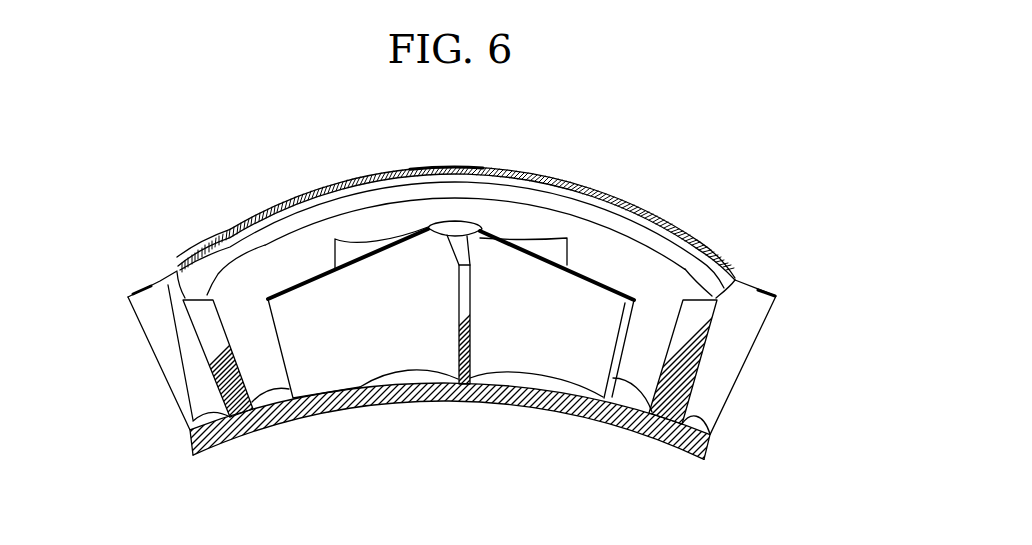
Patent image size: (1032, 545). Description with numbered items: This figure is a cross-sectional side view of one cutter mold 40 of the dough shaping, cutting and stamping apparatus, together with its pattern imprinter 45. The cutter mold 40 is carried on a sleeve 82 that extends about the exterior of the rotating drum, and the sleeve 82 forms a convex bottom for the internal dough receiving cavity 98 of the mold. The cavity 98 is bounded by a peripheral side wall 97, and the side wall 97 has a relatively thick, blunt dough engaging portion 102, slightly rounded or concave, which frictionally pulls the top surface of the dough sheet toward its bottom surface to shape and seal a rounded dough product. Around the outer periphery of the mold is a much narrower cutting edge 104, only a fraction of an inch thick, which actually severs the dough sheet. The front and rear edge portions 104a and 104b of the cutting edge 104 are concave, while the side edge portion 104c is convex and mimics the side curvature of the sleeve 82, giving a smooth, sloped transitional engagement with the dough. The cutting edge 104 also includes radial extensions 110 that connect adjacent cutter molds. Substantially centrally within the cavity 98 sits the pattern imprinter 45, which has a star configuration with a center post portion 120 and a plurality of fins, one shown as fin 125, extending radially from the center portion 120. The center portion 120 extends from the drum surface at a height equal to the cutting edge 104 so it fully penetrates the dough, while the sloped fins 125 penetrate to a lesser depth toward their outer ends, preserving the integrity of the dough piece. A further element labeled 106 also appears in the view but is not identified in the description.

The cutter mold 40 is at (728, 257).
The pattern imprinter 45 is at (434, 222).
The sleeve 82 is at (698, 430).
The peripheral side wall 97 is at (293, 192).
The internal dough receiving cavity 98 is at (645, 266).
The dough engaging portion 102 is at (263, 175).
The cutting edge 104 is at (175, 257).
The front edge portion 104a is at (167, 292).
The rear edge portion 104b is at (745, 279).
The side edge portion 104c is at (390, 167).
The outer wall 106 is at (613, 193).
The radial extensions 110 is at (130, 296).
The center post portion 120 is at (459, 228).
The fin 125 is at (350, 356).